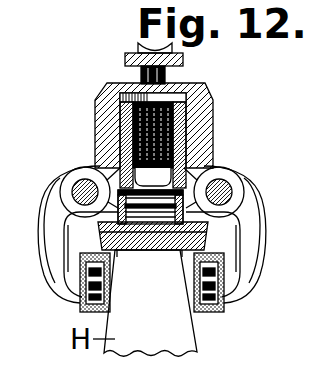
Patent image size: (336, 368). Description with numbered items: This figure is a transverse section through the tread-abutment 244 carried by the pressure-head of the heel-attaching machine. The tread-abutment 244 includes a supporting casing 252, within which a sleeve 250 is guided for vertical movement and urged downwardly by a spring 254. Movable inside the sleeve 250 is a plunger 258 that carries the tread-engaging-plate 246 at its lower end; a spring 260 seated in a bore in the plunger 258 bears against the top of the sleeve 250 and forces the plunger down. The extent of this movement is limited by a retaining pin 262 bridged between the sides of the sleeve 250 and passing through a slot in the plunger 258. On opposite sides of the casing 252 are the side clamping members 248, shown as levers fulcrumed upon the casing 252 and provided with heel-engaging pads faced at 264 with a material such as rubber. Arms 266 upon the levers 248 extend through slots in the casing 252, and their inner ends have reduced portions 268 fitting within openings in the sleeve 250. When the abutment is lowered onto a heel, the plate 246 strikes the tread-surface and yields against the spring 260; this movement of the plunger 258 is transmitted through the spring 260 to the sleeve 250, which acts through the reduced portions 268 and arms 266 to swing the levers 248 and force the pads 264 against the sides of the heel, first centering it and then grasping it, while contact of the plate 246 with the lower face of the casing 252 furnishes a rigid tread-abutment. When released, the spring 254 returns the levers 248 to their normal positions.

The supporting casing 252 is at (127, 88).
The spring 254 is at (168, 80).
The plunger 258 is at (135, 118).
The spring 260 is at (200, 106).
The sleeve 250 is at (182, 130).
The arms 266 is at (208, 174).
The reduced portions 268 is at (92, 170).
The tread-abutment 244 is at (242, 172).
The retaining pin 262 is at (62, 216).
The tread-engaging-plate 246 is at (207, 245).
The heel-engaging pads 264 is at (187, 305).
The side clamping members 248 is at (80, 300).